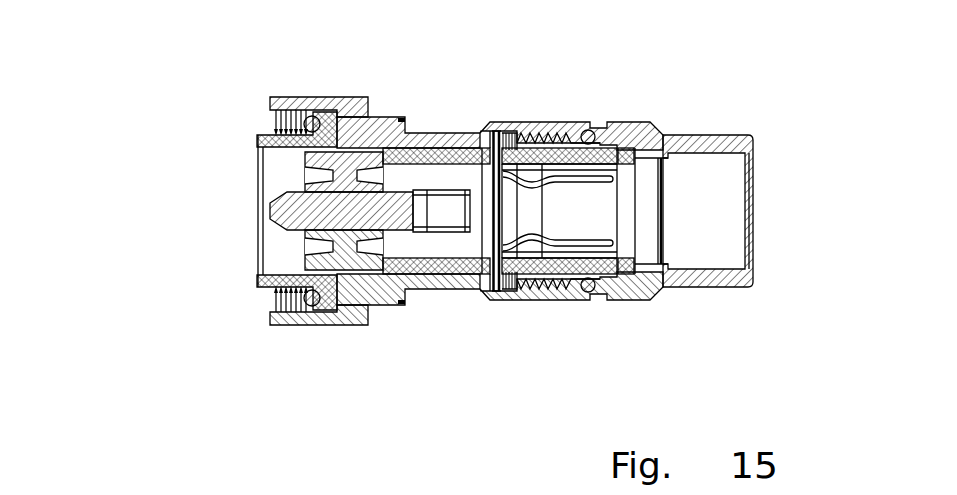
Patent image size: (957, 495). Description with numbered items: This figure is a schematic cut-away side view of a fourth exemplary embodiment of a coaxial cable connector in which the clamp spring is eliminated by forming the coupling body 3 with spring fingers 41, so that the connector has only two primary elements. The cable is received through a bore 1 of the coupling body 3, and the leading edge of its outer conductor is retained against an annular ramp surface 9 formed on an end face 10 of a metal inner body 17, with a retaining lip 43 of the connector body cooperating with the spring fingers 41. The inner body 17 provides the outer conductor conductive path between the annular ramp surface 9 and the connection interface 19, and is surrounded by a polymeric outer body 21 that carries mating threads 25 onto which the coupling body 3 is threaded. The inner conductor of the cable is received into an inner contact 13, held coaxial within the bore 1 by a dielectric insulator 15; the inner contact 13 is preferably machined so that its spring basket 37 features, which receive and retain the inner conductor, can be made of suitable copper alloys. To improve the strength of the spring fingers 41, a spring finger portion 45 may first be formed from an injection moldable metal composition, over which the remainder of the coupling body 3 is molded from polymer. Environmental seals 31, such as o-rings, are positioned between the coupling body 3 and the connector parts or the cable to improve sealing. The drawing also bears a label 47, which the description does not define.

The connector 1 is at (597, 222).
The connector body 3 is at (703, 135).
The retaining ring 9 is at (491, 262).
The threaded insert 10 is at (503, 137).
The center conductor pin 13 is at (290, 225).
The contact sleeve 15 is at (312, 173).
The flange 17 is at (257, 135).
The cable shield wall 19 is at (243, 238).
The connector body housing 21 is at (383, 117).
The coupling nut 25 is at (562, 293).
The O-ring seal 31 is at (305, 97).
The clamp nut 37 is at (282, 307).
The inner sleeve 41 is at (555, 212).
The washer ring 43 is at (493, 131).
The insulating ring 45 is at (626, 148).
The spring finger 47 is at (507, 201).